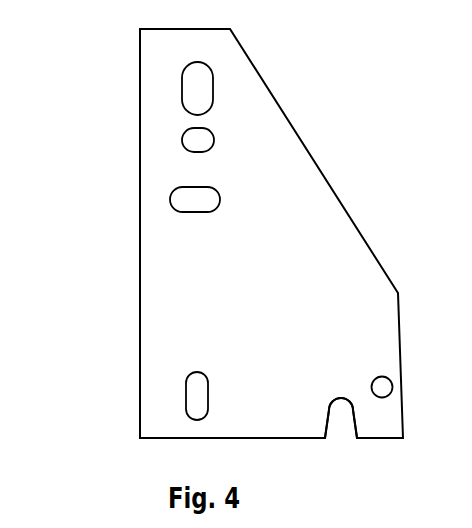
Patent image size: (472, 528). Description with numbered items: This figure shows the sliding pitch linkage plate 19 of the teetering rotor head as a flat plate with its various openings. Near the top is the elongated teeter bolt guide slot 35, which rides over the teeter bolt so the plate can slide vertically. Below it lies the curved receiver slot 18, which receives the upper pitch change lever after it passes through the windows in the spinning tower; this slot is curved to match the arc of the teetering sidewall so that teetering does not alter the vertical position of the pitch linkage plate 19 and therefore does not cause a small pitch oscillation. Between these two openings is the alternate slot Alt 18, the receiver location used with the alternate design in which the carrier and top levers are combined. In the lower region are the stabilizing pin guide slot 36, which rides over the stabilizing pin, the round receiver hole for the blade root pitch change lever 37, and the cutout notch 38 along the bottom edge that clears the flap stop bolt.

The pitch linkage plate 19 is at (337, 185).
The teeter bolt guide slot 35 is at (218, 73).
The alternate slot Alt 18 is at (179, 142).
The curved receiver slot 18 is at (166, 195).
The stabilizing pin guide slot 36 is at (179, 385).
The round receiver hole for the blade root pitch change lever 37 is at (397, 375).
The cutout notch 38 is at (339, 423).